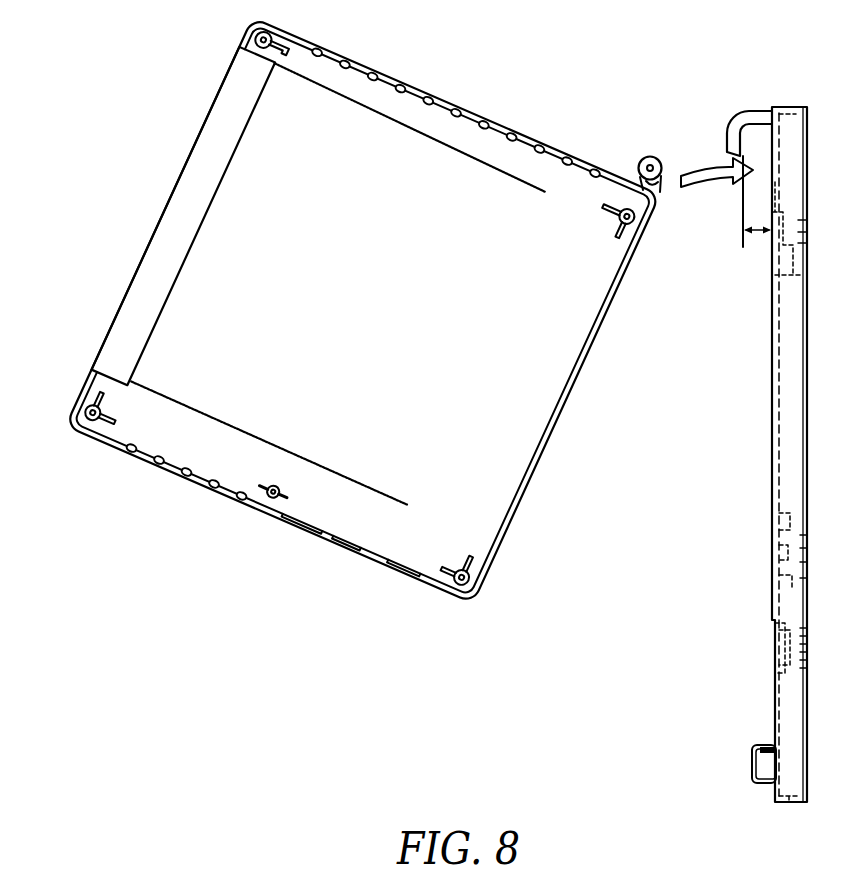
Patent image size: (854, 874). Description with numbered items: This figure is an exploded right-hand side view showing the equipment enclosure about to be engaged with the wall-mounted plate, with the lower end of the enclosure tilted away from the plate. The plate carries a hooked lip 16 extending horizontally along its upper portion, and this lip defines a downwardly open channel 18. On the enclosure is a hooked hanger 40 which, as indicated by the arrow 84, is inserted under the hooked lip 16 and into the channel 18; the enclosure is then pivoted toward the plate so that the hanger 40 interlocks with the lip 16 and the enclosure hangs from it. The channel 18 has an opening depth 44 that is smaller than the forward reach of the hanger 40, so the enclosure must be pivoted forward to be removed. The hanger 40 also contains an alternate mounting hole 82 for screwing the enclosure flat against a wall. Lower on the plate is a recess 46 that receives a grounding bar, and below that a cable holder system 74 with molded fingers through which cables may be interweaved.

The hooked lip 16 is at (730, 120).
The channel 18 is at (757, 133).
The hanger 40 is at (639, 158).
The opening depth 44 is at (752, 240).
The recess 46 is at (783, 648).
The cable holder system 74 is at (753, 780).
The alternate mounting hole 82 is at (661, 163).
The arrow 84 is at (710, 187).